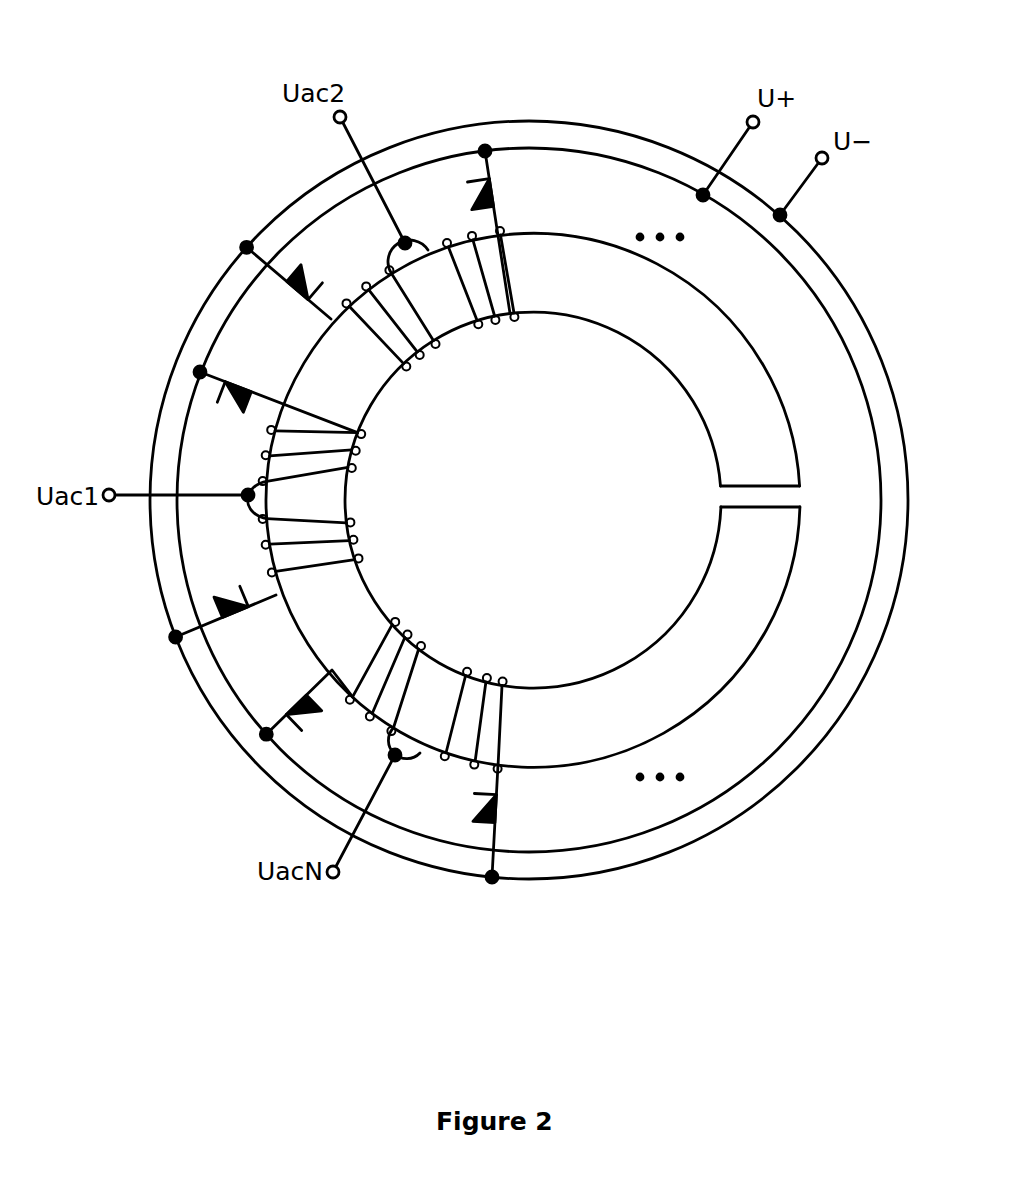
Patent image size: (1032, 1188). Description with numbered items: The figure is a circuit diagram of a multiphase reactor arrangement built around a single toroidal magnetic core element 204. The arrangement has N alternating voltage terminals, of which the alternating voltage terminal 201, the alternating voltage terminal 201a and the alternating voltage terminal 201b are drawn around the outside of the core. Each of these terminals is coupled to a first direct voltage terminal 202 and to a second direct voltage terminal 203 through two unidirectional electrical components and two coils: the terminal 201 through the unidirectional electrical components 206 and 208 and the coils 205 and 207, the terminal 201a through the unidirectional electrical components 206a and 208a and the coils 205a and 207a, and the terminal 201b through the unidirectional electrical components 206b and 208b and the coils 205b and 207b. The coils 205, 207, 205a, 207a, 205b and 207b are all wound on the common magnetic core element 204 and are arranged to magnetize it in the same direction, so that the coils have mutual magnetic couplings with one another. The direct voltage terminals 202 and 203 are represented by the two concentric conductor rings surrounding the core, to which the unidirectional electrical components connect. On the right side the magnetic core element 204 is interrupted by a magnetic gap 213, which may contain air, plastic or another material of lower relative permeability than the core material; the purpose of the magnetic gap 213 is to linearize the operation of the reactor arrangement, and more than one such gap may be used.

The alternating voltage terminal 201 is at (110, 489).
The alternating voltage terminal 201a is at (345, 112).
The alternating voltage terminal 201b is at (337, 878).
The first direct voltage terminal 202 is at (751, 116).
The second direct voltage terminal 203 is at (826, 166).
The magnetic core element 204 is at (676, 380).
The coil 205 is at (368, 418).
The coil 205a is at (462, 345).
The coil 205b is at (392, 600).
The unidirectional electrical component 206 is at (240, 382).
The unidirectional electrical component 206a is at (497, 185).
The unidirectional electrical component 206b is at (297, 700).
The coil 207 is at (368, 503).
The coil 207a is at (396, 386).
The coil 207b is at (464, 642).
The unidirectional electrical component 208 is at (232, 596).
The unidirectional electrical component 208a is at (303, 262).
The unidirectional electrical component 208b is at (497, 817).
The magnetic gap 213 is at (753, 493).